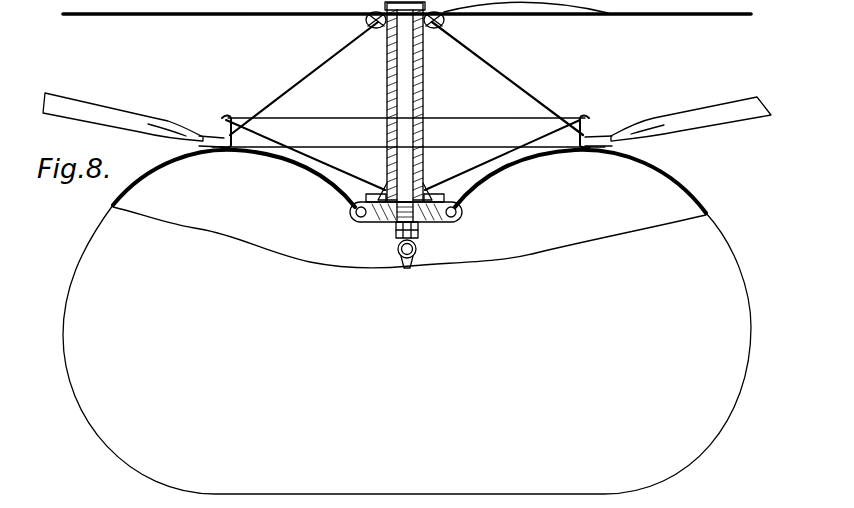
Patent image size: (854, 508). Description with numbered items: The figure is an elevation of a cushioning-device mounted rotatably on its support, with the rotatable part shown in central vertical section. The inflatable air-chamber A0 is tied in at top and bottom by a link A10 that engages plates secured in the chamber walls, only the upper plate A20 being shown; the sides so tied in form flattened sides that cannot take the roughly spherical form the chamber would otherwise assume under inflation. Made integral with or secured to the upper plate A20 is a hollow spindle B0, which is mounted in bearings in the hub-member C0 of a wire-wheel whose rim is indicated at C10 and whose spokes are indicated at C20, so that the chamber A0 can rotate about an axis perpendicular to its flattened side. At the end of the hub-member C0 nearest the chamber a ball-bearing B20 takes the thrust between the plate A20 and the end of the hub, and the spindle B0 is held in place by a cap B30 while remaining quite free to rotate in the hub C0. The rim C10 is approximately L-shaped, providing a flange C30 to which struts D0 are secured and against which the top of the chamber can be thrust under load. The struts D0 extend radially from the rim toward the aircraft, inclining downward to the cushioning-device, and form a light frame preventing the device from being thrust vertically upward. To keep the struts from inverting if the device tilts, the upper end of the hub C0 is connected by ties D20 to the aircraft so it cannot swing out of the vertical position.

The air-chamber A0 is at (657, 181).
The link A10 is at (409, 262).
The upper plate A20 is at (360, 222).
The hollow spindle B0 is at (424, 83).
The ball-bearing B20 is at (460, 203).
The cap B30 is at (548, 17).
The hub-member C0 is at (427, 31).
The rim C10 is at (278, 128).
The spokes C20 is at (321, 70).
The flange C30 is at (229, 151).
The struts D0 is at (80, 106).
The ties D20 is at (650, 31).